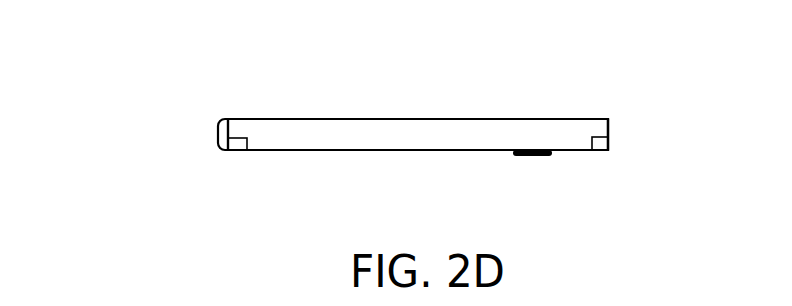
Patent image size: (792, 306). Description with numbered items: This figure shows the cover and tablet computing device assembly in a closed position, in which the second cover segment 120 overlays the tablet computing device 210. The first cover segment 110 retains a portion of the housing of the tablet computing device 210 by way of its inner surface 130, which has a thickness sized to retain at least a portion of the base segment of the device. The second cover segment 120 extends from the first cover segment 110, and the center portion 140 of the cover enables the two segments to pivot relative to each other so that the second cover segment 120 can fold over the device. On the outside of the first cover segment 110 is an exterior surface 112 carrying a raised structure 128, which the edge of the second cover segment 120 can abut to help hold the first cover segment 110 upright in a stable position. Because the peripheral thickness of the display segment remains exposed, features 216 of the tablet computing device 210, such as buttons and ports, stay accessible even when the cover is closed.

The second cover segment 120 is at (315, 118).
The tablet computing device 210 is at (480, 142).
The center portion 140 is at (216, 133).
The features 216 is at (613, 126).
The inner surface 130 is at (613, 147).
The exterior surface 112 is at (384, 152).
The first cover segment 110 is at (451, 152).
The raised structure 128 is at (533, 158).